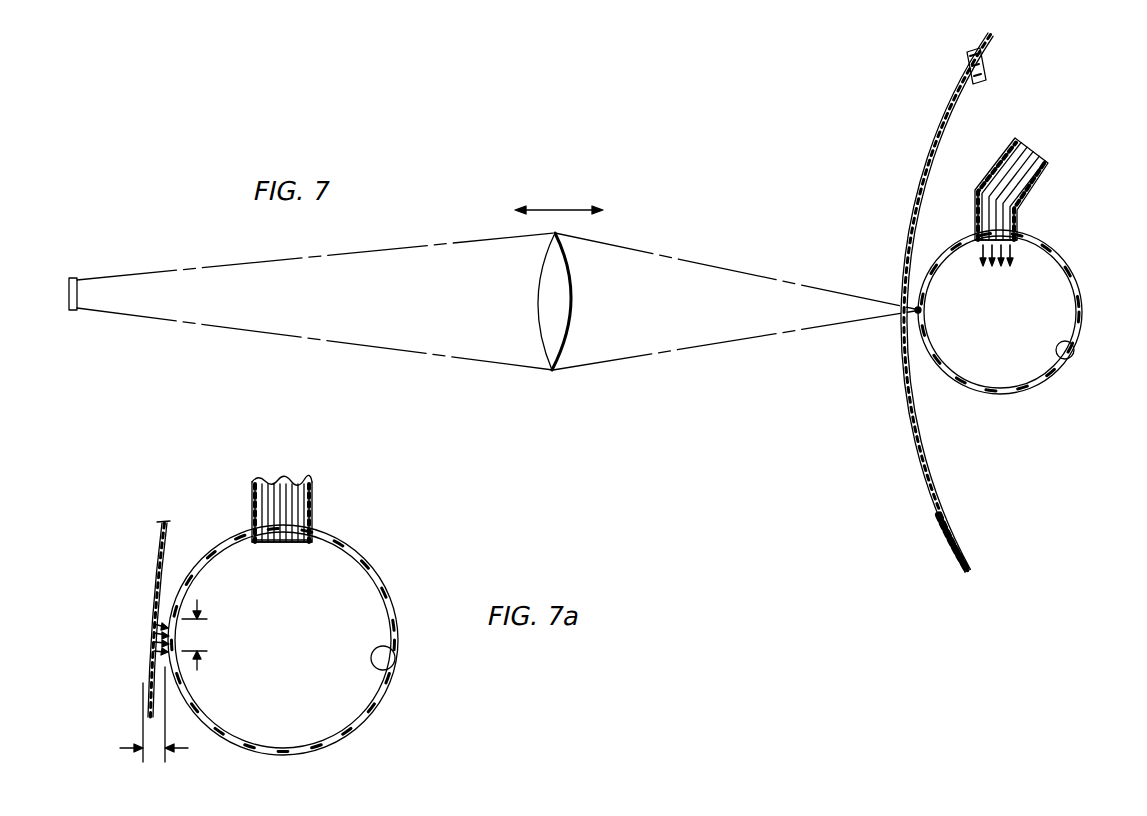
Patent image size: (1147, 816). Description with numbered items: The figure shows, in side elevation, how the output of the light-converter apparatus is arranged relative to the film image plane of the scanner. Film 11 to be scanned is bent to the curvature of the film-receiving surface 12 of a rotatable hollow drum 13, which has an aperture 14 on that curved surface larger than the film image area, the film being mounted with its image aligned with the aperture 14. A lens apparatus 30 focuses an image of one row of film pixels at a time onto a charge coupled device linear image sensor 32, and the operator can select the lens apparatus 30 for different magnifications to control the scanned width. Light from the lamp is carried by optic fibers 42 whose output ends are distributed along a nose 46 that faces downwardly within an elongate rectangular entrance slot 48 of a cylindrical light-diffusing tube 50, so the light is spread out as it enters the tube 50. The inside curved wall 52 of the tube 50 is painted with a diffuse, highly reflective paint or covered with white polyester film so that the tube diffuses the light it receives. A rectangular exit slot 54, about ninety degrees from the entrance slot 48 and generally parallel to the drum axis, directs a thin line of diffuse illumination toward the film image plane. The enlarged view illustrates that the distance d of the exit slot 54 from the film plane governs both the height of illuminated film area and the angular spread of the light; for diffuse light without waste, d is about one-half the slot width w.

In FIG. 7, the film 11 is at (925, 138).
In FIG. 7a, the film 11 is at (151, 578).
In FIG. 7, the film-receiving surface 12 is at (984, 64).
In FIG. 7, the rotatable hollow drum 13 is at (952, 560).
In FIG. 7, the aperture 14 is at (945, 523).
In FIG. 7, the lens apparatus 30 is at (560, 316).
In FIG. 7, the charge coupled device linear image sensor 32 is at (72, 312).
In FIG. 7, the optic fibers 42 is at (1040, 150).
In FIG. 7a, the optic fibers 42 is at (293, 492).
In FIG. 7, the nose 46 is at (1018, 216).
In FIG. 7a, the nose 46 is at (311, 500).
In FIG. 7, the entrance slot 48 is at (1016, 243).
In FIG. 7a, the entrance slot 48 is at (313, 532).
In FIG. 7, the light-diffusing tube 50 is at (1010, 392).
In FIG. 7a, the light-diffusing tube 50 is at (336, 714).
In FIG. 7, the inside curved wall 52 is at (1062, 365).
In FIG. 7a, the inside curved wall 52 is at (395, 668).
In FIG. 7, the exit slot 54 is at (918, 312).
In FIG. 7a, the exit slot 54 is at (167, 613).